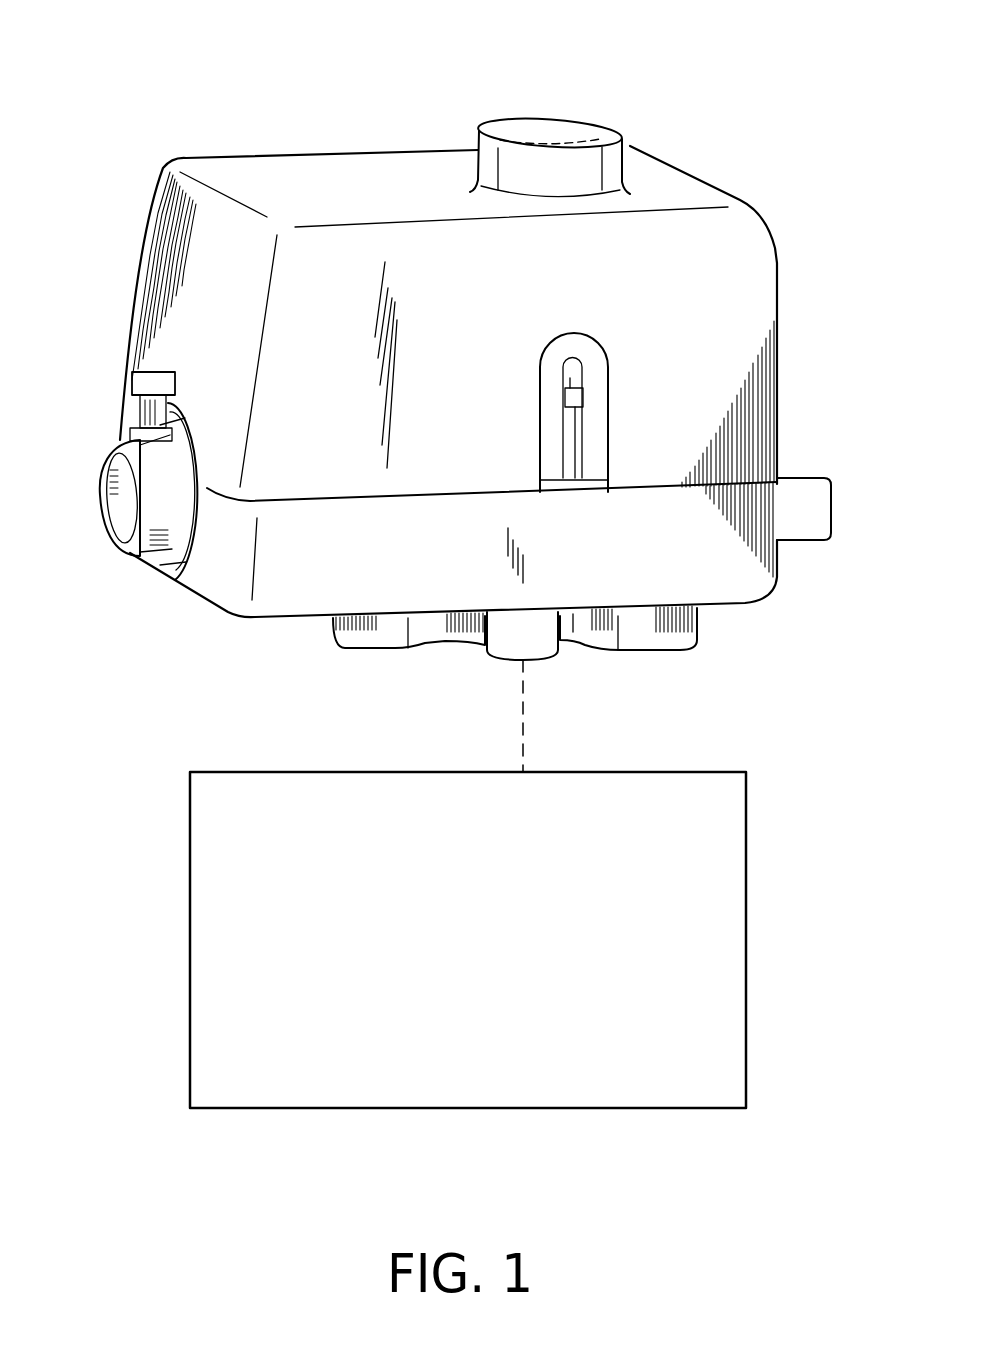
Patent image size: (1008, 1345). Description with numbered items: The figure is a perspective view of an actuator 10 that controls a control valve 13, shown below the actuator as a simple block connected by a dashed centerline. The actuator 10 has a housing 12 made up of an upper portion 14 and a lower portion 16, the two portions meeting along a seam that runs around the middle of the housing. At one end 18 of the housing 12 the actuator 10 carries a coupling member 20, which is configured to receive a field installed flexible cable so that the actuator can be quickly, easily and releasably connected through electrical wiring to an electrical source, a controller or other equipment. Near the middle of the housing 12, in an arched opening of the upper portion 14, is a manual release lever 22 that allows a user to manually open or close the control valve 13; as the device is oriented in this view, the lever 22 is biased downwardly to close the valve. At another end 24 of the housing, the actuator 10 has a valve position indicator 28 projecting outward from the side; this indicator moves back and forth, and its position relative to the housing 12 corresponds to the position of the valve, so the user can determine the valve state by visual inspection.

The actuator 10 is at (613, 70).
The housing 12 is at (750, 165).
The control valve 13 is at (746, 947).
The upper portion 14 is at (352, 170).
The lower portion 16 is at (735, 607).
The one end 18 is at (145, 252).
The coupling member 20 is at (100, 463).
The manual release lever 22 is at (583, 395).
The another end 24 is at (780, 352).
The valve position indicator 28 is at (813, 478).